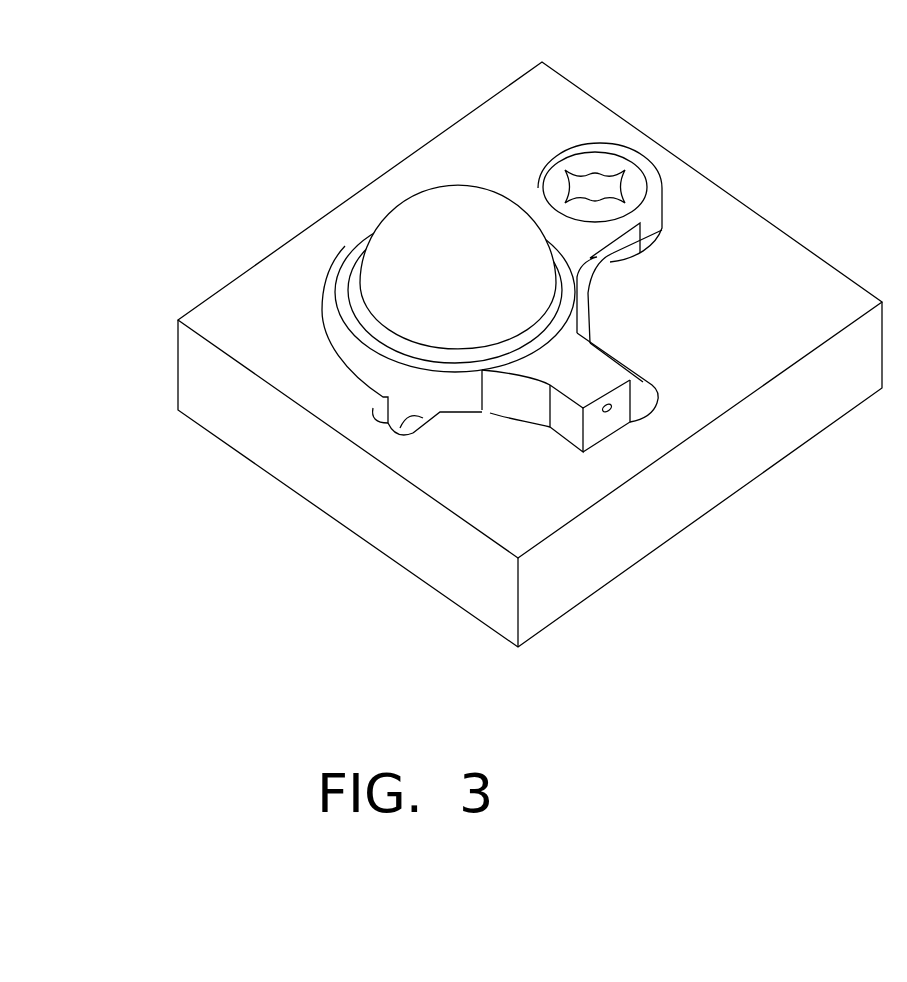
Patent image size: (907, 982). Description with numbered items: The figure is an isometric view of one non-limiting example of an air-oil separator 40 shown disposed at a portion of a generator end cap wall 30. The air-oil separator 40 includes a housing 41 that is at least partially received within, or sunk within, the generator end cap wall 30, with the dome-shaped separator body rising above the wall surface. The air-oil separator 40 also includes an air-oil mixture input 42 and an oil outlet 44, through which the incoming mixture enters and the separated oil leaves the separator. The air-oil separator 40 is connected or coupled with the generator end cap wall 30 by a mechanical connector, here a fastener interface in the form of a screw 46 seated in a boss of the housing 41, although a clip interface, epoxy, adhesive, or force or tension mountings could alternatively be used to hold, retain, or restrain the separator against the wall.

The generator end cap wall 30 is at (803, 278).
The air-oil separator 40 is at (443, 182).
The housing 41 is at (335, 258).
The air-oil mixture input 42 is at (392, 424).
The oil outlet 44 is at (610, 413).
The screw 46 is at (597, 181).